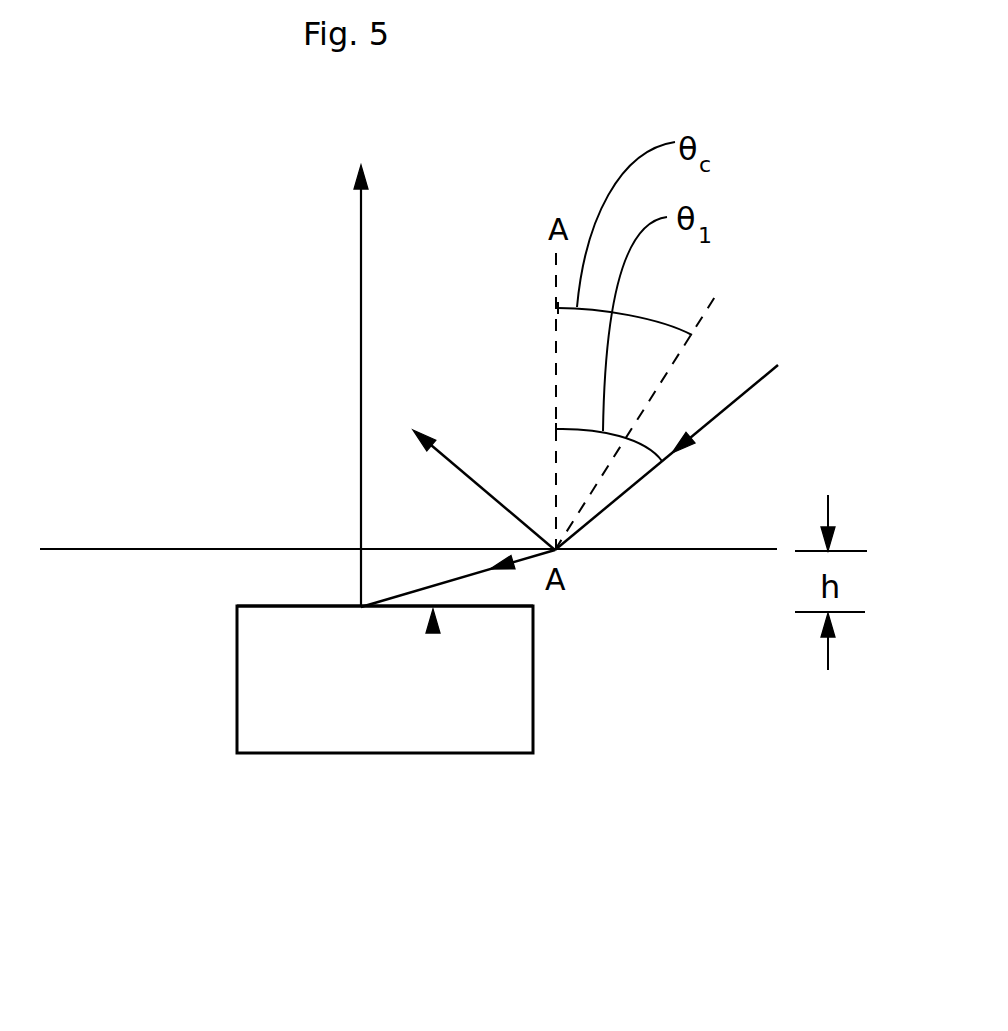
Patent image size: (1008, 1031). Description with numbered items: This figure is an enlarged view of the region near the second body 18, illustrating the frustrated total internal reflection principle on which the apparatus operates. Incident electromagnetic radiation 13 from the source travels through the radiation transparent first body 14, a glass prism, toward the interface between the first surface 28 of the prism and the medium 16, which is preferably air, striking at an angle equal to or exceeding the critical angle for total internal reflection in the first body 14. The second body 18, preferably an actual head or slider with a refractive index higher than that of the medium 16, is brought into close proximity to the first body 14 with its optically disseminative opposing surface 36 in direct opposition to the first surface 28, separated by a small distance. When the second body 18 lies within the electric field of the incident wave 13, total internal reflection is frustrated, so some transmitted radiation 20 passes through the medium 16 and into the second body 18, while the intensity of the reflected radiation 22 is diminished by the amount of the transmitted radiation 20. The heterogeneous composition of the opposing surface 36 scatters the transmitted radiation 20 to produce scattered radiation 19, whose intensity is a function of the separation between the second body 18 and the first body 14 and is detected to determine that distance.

The incident electromagnetic radiation 13 is at (743, 398).
The first body 14 is at (141, 300).
The medium 16 is at (305, 595).
The second body 18 is at (352, 754).
The scattered radiation 19 is at (361, 320).
The transmitted radiation 20 is at (512, 563).
The reflected radiation 22 is at (472, 474).
The first surface 28 is at (148, 578).
The opposing surface 36 is at (433, 633).